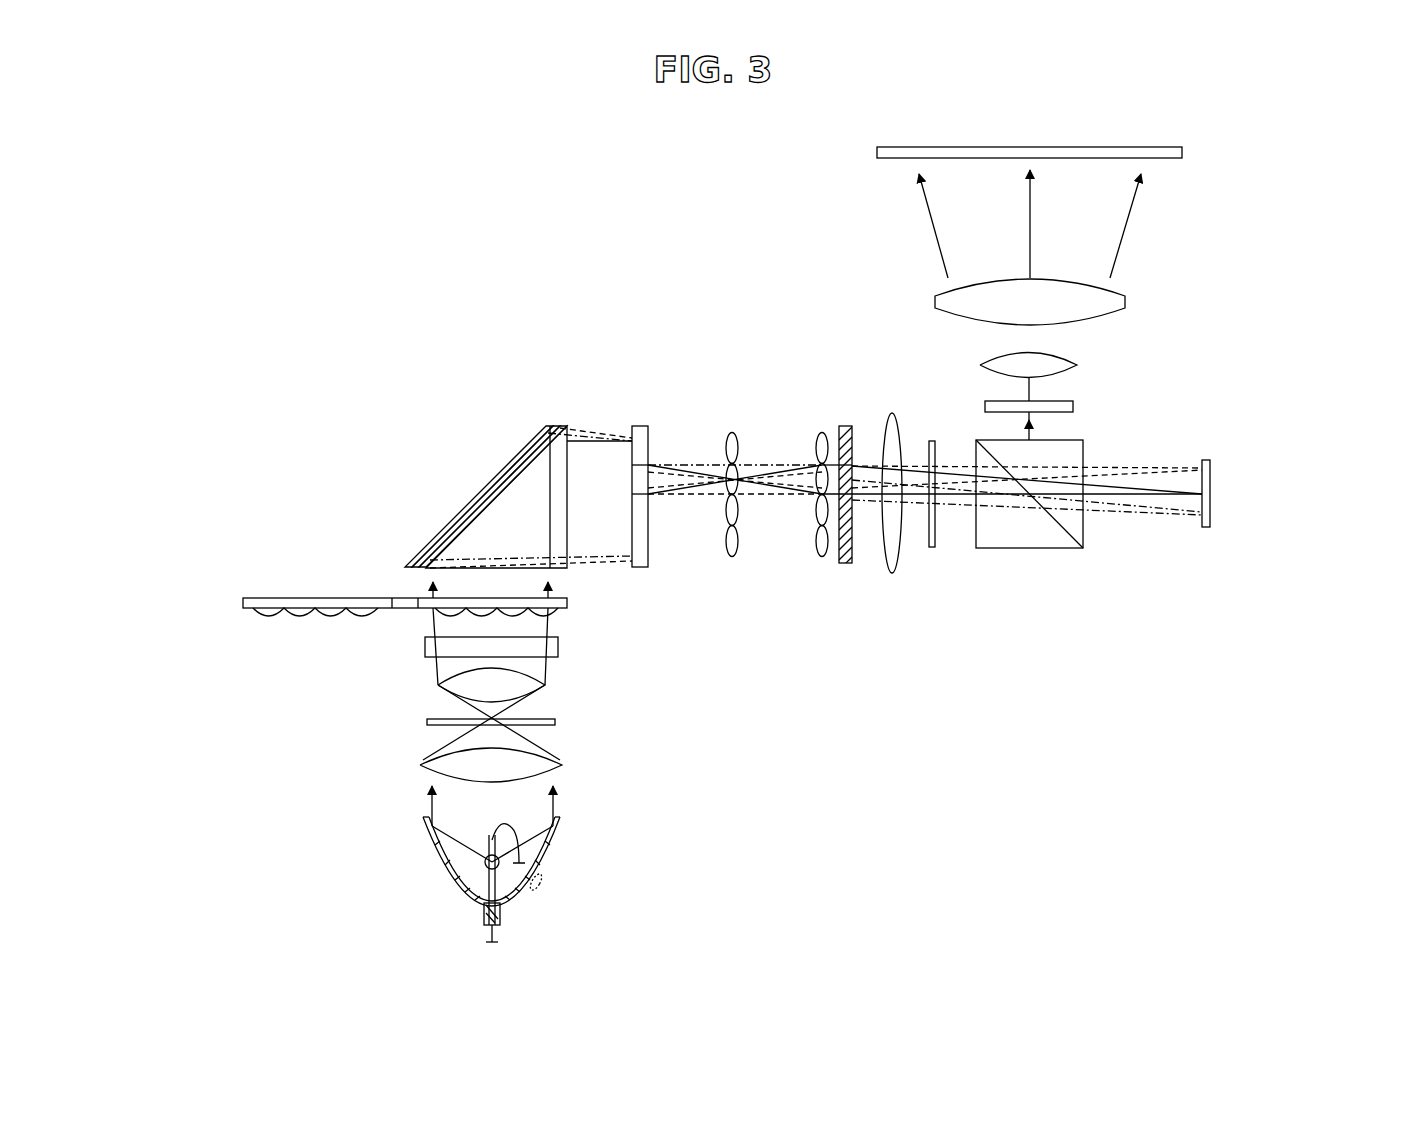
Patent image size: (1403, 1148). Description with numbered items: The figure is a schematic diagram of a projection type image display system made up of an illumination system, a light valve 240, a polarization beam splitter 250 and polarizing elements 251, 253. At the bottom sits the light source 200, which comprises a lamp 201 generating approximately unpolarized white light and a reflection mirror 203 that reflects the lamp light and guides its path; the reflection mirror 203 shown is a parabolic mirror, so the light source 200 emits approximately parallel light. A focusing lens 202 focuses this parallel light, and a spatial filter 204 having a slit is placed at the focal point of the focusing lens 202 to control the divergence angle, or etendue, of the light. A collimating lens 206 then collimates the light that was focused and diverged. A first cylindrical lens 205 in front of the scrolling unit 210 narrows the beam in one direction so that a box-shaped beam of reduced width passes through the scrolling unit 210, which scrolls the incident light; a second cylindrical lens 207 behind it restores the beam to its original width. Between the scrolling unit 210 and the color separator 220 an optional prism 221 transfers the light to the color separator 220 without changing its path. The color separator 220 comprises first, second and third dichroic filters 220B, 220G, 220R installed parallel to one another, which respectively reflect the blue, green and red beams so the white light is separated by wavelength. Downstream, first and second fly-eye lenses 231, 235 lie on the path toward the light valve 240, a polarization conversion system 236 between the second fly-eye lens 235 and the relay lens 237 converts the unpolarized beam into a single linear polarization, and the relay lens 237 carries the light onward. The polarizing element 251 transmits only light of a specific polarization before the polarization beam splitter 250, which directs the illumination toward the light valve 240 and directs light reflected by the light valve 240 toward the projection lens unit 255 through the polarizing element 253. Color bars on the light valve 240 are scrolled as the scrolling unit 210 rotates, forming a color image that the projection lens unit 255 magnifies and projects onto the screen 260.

The light source 200 is at (529, 864).
The lamp 201 is at (455, 866).
The focusing lens 202 is at (562, 766).
The reflection mirror 203 is at (537, 887).
The spatial filter 204 is at (555, 722).
The first cylindrical lens 205 is at (558, 647).
The collimating lens 206 is at (545, 686).
The second cylindrical lens 207 is at (640, 426).
The scrolling unit 210 is at (567, 603).
The color separator 220 is at (470, 435).
The third dichroic filter 220R is at (463, 462).
The second dichroic filter 220G is at (503, 479).
The first dichroic filter 220B is at (546, 443).
The prism 221 is at (500, 528).
The first fly-eye lens 231 is at (732, 433).
The second fly-eye lens 235 is at (822, 433).
The polarization conversion system 236 is at (843, 563).
The relay lens 237 is at (893, 573).
The light valve 240 is at (1207, 460).
The polarization beam splitter 250 is at (1066, 548).
The polarizing element 251 is at (933, 548).
The polarizing element 253 is at (1073, 404).
The projection lens unit 255 is at (918, 288).
The screen 260 is at (1182, 152).